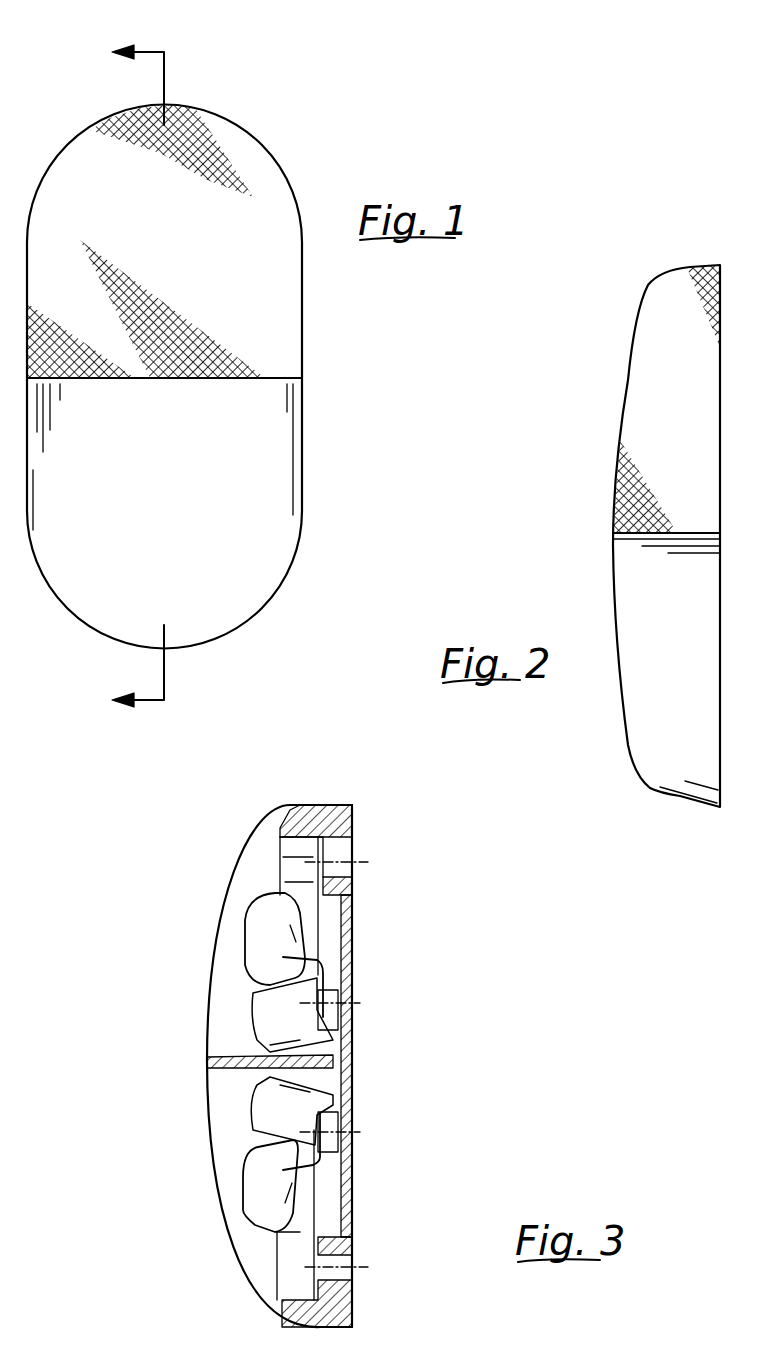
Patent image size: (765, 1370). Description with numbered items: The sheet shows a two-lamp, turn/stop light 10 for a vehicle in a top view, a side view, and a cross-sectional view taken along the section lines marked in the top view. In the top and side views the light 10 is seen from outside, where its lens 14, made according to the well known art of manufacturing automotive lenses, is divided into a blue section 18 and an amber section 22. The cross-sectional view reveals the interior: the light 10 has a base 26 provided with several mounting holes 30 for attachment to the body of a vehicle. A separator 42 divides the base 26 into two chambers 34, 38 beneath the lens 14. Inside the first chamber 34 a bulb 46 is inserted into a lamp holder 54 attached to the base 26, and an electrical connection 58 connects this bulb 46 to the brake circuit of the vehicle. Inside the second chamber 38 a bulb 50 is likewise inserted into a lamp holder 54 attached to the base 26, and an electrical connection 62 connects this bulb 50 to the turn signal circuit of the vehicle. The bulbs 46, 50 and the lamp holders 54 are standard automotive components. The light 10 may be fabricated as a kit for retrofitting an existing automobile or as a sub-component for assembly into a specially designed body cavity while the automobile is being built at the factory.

In FIG. 1, the two-lamp turn/stop light 10 is at (302, 34).
In FIG. 2, the two-lamp turn/stop light 10 is at (718, 865).
In FIG. 3, the two-lamp turn/stop light 10 is at (204, 1347).
In FIG. 1, the lens 14 is at (292, 135).
In FIG. 2, the lens 14 is at (628, 268).
In FIG. 3, the lens 14 is at (275, 800).
In FIG. 1, the blue section 18 is at (300, 203).
In FIG. 2, the blue section 18 is at (627, 382).
In FIG. 3, the blue section 18 is at (222, 912).
In FIG. 1, the amber section 22 is at (302, 478).
In FIG. 2, the amber section 22 is at (612, 585).
In FIG. 3, the amber section 22 is at (207, 1125).
In FIG. 3, the base 26 is at (355, 835).
In FIG. 3, the mounting holes 30 is at (355, 860).
In FIG. 3, the first chamber 34 is at (262, 862).
In FIG. 3, the second chamber 38 is at (230, 1140).
In FIG. 3, the separator 42 is at (215, 1057).
In FIG. 3, the bulb 46 is at (300, 912).
In FIG. 3, the bulb 50 is at (305, 1205).
In FIG. 3, the lamp holder 54 is at (355, 1030).
In FIG. 3, the electrical connection 58 is at (355, 942).
In FIG. 3, the electrical connection 62 is at (355, 1170).